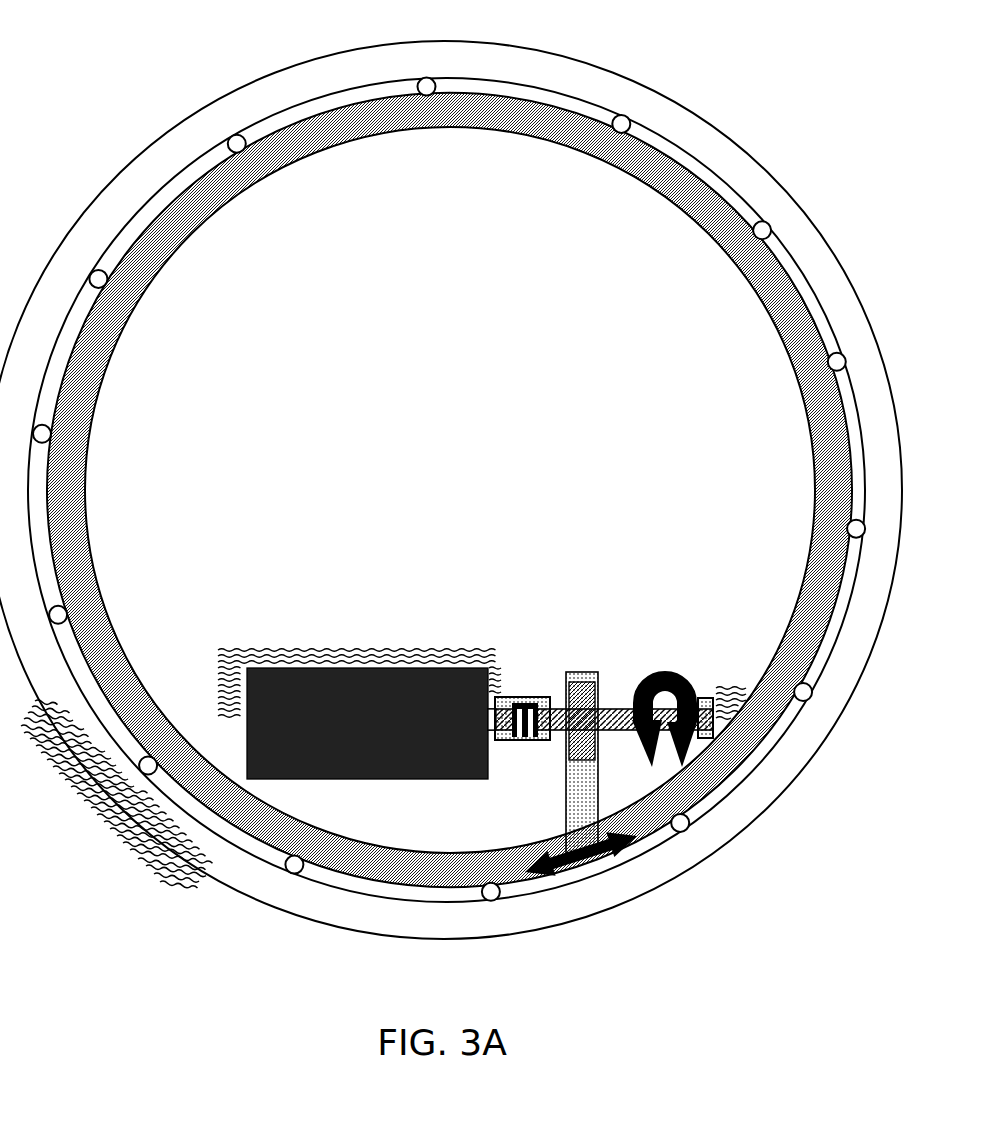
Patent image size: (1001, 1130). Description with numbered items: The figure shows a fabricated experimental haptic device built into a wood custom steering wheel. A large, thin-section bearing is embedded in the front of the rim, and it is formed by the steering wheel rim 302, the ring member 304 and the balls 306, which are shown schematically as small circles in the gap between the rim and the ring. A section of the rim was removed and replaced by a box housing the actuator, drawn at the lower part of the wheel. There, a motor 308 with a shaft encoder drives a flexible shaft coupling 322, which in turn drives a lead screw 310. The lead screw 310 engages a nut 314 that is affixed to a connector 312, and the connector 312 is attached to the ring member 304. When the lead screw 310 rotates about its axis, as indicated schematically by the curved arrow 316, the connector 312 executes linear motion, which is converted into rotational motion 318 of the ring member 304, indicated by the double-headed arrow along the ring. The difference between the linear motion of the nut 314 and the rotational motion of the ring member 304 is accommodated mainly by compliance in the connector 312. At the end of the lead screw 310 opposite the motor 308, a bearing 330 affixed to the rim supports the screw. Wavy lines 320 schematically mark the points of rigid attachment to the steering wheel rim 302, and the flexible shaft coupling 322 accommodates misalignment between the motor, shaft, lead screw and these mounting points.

The steering wheel rim 302 is at (183, 140).
The ring member 304 is at (217, 200).
The balls 306 is at (452, 82).
The motor 308 is at (367, 723).
The lead screw 310 is at (613, 732).
The connector 312 is at (566, 810).
The nut 314 is at (577, 672).
The rotation of lead screw 316 is at (658, 682).
The rotational motion 318 is at (596, 862).
The points of rigid attachment 320 is at (262, 658).
The flexible shaft coupling 322 is at (520, 697).
The bearing 330 is at (702, 742).